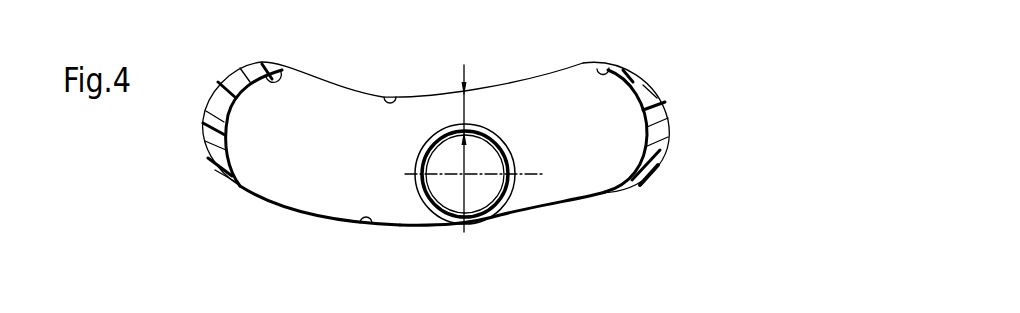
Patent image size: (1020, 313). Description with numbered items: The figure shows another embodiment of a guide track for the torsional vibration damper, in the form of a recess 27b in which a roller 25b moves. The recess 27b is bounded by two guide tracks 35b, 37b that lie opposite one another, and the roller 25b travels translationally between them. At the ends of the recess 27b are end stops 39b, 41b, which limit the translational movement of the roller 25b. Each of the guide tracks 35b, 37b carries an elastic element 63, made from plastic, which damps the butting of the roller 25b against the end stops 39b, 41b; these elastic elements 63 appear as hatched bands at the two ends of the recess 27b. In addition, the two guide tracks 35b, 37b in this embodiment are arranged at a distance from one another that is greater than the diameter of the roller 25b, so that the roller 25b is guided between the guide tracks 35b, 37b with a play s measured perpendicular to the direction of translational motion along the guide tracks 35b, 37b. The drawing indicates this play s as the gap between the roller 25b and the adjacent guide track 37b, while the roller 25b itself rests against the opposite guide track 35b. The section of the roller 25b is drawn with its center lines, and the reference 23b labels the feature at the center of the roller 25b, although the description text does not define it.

The elastic element 63 is at (222, 82).
The bore 23b is at (464, 176).
The roller 25b is at (502, 203).
The recess 27b is at (305, 193).
The guide track 35b is at (359, 222).
The guide track 37b is at (386, 97).
The end stop 39b is at (285, 69).
The end stop 41b is at (604, 66).
The play s is at (465, 106).